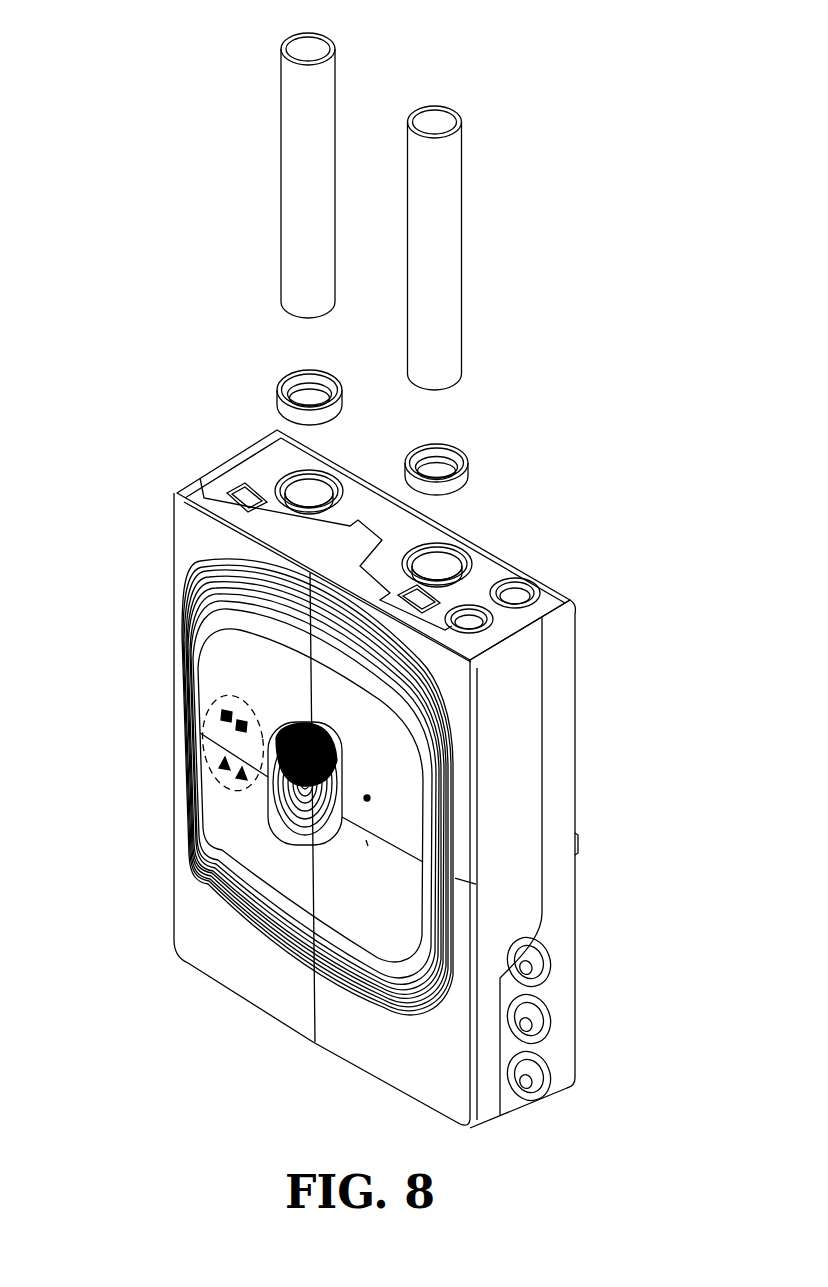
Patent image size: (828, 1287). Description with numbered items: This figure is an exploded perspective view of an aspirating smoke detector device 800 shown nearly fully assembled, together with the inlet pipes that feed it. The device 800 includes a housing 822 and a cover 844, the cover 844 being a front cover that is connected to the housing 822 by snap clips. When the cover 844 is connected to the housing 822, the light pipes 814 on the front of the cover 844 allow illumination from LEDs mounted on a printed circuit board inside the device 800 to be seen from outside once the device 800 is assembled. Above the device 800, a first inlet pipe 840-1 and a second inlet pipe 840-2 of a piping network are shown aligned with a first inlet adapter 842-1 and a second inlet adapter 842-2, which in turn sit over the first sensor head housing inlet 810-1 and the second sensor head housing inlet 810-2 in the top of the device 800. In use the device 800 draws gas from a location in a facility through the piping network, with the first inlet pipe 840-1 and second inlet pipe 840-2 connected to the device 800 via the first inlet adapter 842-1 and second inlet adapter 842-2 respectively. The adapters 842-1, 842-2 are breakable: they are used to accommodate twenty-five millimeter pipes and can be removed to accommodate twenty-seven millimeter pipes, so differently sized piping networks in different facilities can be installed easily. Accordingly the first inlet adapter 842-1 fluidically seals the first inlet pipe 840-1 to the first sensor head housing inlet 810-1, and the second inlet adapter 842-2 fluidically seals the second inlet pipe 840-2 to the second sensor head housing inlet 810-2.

The aspirating smoke detector device 800 is at (199, 87).
The first inlet pipe 840-1 is at (281, 208).
The second inlet pipe 840-2 is at (461, 276).
The first inlet adapter 842-1 is at (278, 392).
The second inlet adapter 842-2 is at (470, 475).
The first sensor head housing inlet 810-1 is at (274, 483).
The second sensor head housing inlet 810-2 is at (473, 563).
The cover 844 is at (197, 545).
The light pipes 814 is at (200, 733).
The housing 822 is at (578, 777).